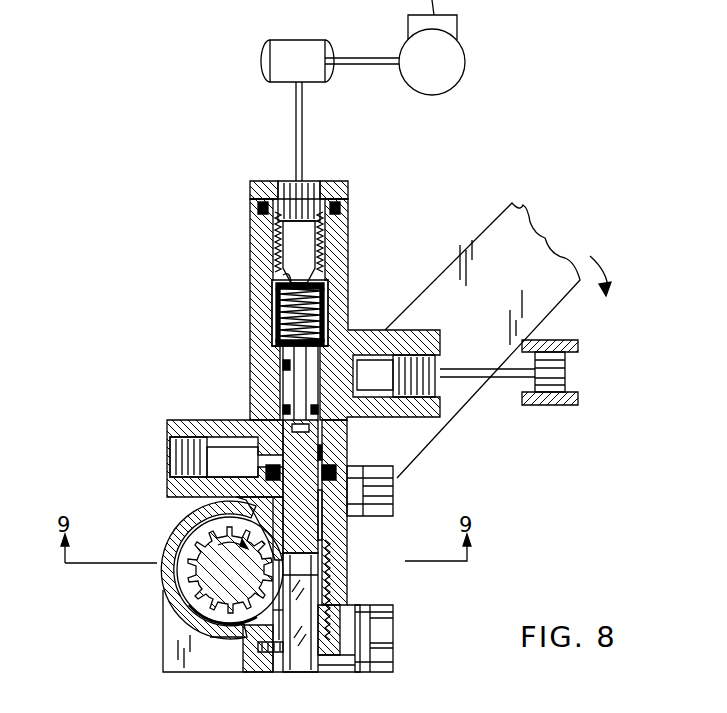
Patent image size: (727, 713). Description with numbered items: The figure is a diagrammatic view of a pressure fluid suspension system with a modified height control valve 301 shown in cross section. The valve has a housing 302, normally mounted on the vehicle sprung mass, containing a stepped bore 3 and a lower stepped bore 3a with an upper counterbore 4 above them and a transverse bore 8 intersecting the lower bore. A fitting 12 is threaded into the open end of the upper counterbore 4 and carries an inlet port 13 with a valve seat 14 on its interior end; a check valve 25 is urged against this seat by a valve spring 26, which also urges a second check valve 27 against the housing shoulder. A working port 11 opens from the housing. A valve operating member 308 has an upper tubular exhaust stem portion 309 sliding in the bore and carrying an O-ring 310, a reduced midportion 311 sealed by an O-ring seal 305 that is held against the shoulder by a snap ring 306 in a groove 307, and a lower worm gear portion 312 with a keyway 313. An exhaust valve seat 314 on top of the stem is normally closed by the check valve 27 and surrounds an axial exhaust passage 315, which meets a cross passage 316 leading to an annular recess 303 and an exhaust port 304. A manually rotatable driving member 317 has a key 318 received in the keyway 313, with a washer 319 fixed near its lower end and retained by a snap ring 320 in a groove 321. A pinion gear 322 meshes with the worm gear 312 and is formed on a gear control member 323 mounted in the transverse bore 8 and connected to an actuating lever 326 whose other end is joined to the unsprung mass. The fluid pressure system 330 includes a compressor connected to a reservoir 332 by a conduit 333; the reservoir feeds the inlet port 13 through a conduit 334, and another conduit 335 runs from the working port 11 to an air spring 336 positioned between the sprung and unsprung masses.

The stepped bore 3 is at (284, 393).
The stepped bore 3a is at (270, 636).
The upper counterbore 4 is at (334, 312).
The transverse bore 8 is at (182, 531).
The working port 11 is at (440, 358).
The fitting 12 is at (345, 190).
The inlet port 13 is at (311, 182).
The valve seat 14 is at (262, 258).
The check valve 25 is at (272, 296).
The valve spring 26 is at (336, 320).
The check valve 27 is at (270, 328).
The height control valve 301 is at (218, 197).
The housing 302 is at (348, 228).
The annular recess 303 is at (322, 455).
The exhaust port 304 is at (178, 475).
The O-ring seal 305 is at (356, 479).
The snap ring 306 is at (348, 486).
The groove 307 is at (280, 495).
The valve operating member 308 is at (232, 462).
The exhaust stem portion 309 is at (272, 370).
The O-ring 310 is at (284, 410).
The reduced midportion 311 is at (340, 514).
The worm gear portion 312 is at (346, 562).
The keyway 313 is at (262, 568).
The exhaust valve seat 314 is at (276, 352).
The exhaust passage 315 is at (375, 375).
The cross passage 316 is at (319, 426).
The driving member 317 is at (302, 657).
The key 318 is at (305, 595).
The washer 319 is at (372, 640).
The snap ring 320 is at (394, 660).
The groove 321 is at (258, 655).
The pinion gear 322 is at (192, 553).
The gear control member 323 is at (200, 597).
The actuating lever 326 is at (524, 234).
The fluid pressure system 330 is at (468, 58).
The reservoir 332 is at (296, 45).
The conduit 333 is at (363, 57).
The conduit 334 is at (304, 112).
The conduit 335 is at (503, 382).
The air spring 336 is at (566, 375).